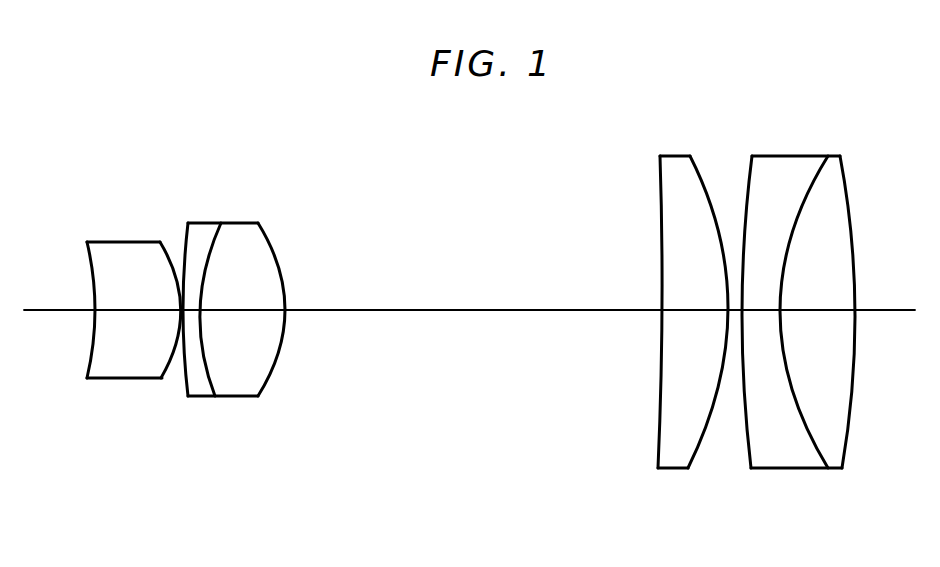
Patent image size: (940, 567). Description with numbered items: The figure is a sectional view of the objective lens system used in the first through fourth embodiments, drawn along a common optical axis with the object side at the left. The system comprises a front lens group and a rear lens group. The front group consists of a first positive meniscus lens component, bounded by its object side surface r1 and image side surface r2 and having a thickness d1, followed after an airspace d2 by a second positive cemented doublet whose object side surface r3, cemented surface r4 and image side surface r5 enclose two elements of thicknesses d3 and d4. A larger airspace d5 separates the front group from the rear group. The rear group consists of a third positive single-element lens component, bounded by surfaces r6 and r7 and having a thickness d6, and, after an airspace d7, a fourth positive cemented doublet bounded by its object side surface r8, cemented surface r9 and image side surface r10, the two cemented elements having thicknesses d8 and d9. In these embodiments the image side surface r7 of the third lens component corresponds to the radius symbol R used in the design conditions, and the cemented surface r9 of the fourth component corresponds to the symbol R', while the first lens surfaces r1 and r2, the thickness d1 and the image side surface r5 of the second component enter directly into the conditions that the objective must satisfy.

The thickness of the first lens component d1 is at (132, 310).
The airspace between first and second lens components d2 is at (181, 300).
The thickness of first element of the second lens component d3 is at (193, 310).
The thickness of second element of the second lens component d4 is at (238, 310).
The airspace between front and rear lens groups d5 is at (475, 310).
The thickness of the third lens component d6 is at (687, 310).
The airspace between third and fourth lens components d7 is at (732, 307).
The thickness of negative element of the fourth lens component d8 is at (768, 306).
The thickness of positive element of the fourth lens component d9 is at (820, 310).
The radius of curvature of object side surface of the first lens component r1 is at (88, 331).
The radius of curvature of image side surface of the first lens component r2 is at (170, 372).
The radius of curvature of object side surface of the second lens component r3 is at (184, 388).
The radius of curvature of cemented surface of the second lens component r4 is at (212, 388).
The radius of curvature of image side surface of the second lens component r5 is at (267, 388).
The radius of curvature of object side surface of the third lens component r6 is at (657, 457).
The radius of curvature of image side surface of the third lens component r7 is at (698, 455).
The radius of curvature of object side surface of the fourth lens component r8 is at (747, 455).
The radius of curvature of cemented surface of the fourth lens component r9 is at (817, 457).
The radius of curvature of image side surface of the fourth lens component r10 is at (850, 448).